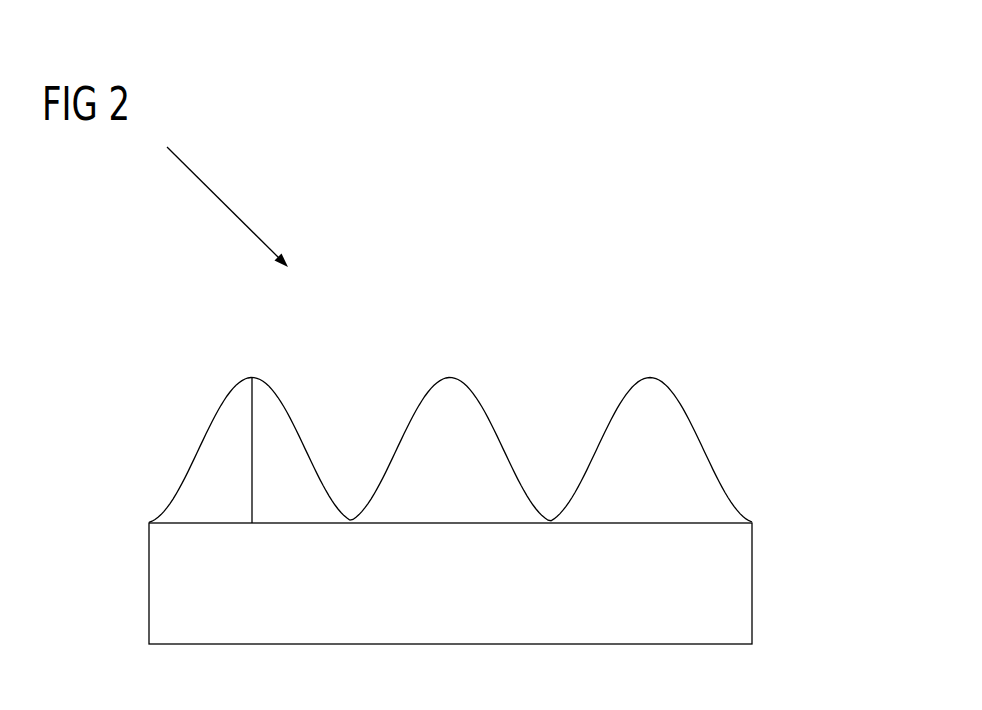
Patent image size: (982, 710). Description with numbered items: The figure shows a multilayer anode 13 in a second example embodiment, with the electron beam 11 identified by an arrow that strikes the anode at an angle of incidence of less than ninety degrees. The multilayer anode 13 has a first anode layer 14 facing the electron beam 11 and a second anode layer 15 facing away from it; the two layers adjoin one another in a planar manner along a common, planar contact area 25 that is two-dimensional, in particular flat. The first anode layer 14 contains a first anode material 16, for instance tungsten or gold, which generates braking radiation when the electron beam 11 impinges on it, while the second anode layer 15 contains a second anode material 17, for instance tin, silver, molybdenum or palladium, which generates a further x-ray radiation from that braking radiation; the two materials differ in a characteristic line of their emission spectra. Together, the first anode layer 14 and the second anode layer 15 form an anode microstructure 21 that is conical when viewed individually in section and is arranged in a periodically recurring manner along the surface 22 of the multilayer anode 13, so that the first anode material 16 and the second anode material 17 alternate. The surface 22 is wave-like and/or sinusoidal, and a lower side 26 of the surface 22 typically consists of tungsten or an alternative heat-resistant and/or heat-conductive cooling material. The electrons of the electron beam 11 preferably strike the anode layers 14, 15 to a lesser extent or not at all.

The electron beam 11 is at (218, 195).
The surface 22 is at (421, 394).
The contact area 25 is at (247, 402).
The multilayer anode 13 is at (290, 356).
The anode microstructure 21 is at (307, 360).
The first anode layer 14 is at (163, 453).
The first anode material 16 is at (215, 445).
The second anode layer 15 is at (336, 453).
The second anode material 17 is at (285, 428).
The lower side 26 is at (752, 578).